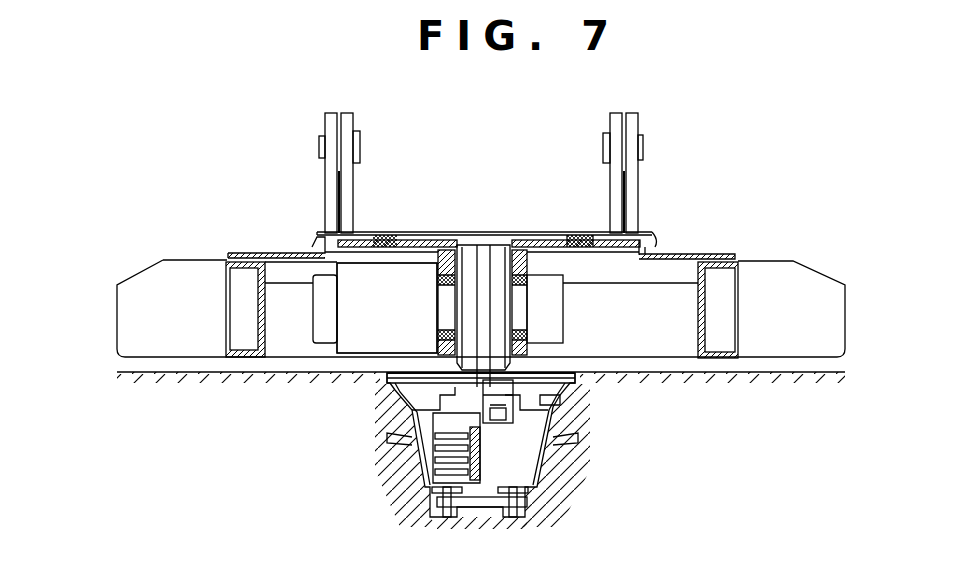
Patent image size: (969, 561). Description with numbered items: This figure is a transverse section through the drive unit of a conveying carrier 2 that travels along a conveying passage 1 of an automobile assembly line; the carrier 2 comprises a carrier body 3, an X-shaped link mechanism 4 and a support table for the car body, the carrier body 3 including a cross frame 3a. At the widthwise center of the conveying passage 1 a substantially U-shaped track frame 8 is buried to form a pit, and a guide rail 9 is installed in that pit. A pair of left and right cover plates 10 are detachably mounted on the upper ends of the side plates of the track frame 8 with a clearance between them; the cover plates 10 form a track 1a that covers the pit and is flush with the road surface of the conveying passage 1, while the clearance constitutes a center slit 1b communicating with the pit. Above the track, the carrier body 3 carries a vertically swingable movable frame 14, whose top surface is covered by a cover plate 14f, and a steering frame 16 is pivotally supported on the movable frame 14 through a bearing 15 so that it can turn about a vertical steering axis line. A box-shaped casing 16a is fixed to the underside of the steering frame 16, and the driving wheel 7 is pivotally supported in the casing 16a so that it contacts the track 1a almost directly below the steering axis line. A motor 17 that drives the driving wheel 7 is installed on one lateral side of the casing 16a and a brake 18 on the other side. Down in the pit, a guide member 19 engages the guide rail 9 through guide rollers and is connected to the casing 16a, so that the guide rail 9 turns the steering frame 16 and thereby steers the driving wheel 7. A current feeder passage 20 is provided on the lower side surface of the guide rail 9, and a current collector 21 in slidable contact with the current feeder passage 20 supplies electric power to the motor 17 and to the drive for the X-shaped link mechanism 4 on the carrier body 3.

The conveying passage 1 is at (185, 368).
The track 1a is at (388, 385).
The cover plates 10 is at (439, 424).
The center slit 1b is at (487, 378).
The conveying carrier 2 is at (250, 247).
The carrier body 3 is at (288, 253).
The cross frame 3a is at (677, 292).
The X-shaped link mechanism 4 is at (327, 197).
The driving wheel 7 is at (500, 253).
The track frame 8 is at (550, 465).
The guide rail 9 is at (493, 387).
The movable frame 14 is at (363, 240).
The cover plate 14f is at (598, 228).
The bearing 15 is at (397, 232).
The steering frame 16 is at (555, 242).
The casing 16a is at (447, 253).
The motor 17 is at (358, 338).
The brake 18 is at (555, 307).
The guide member 19 is at (547, 407).
The current feeder passage 20 is at (485, 470).
The current collector 21 is at (407, 443).